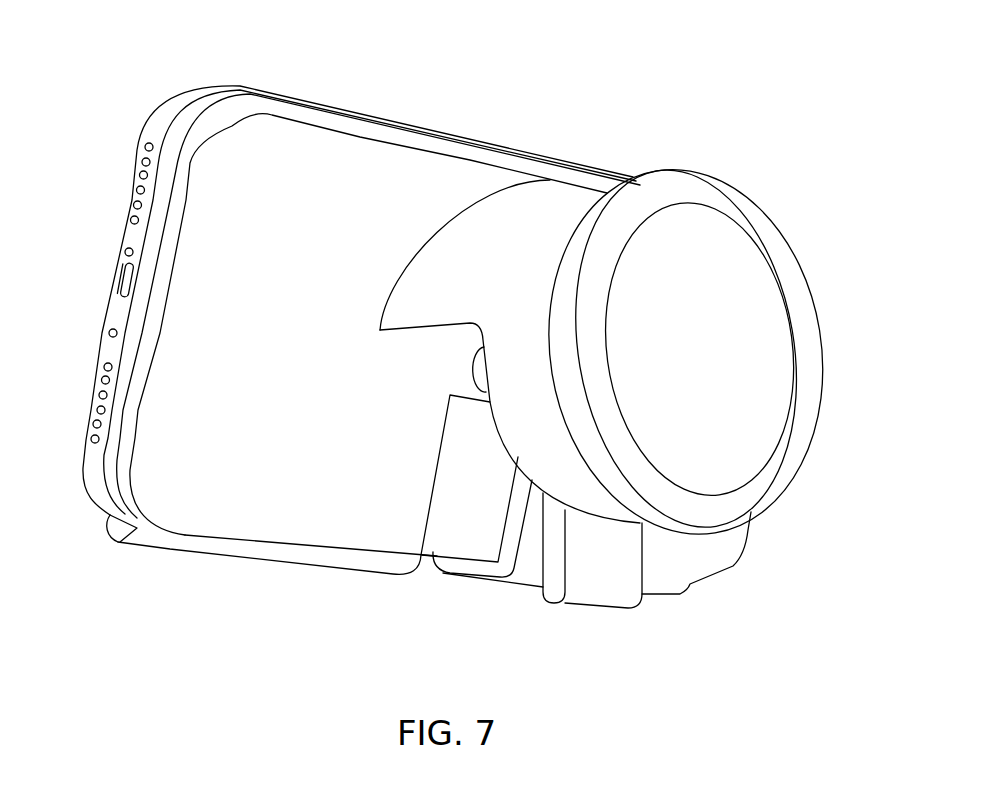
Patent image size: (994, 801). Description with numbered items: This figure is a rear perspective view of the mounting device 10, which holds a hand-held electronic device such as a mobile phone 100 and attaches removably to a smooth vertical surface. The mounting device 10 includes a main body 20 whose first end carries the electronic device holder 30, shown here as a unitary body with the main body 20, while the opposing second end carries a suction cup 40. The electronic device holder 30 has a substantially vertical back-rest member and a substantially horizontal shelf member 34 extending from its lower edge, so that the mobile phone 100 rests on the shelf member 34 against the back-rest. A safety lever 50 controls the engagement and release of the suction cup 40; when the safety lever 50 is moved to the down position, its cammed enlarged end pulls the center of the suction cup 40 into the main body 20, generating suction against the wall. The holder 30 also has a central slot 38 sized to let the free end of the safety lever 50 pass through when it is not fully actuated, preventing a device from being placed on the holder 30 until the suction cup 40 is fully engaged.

The mounting device 10 is at (128, 62).
The mobile phone 100 is at (112, 172).
The main body 20 is at (515, 235).
The electronic device holder 30 is at (263, 163).
The shelf member 34 is at (132, 531).
The slot 38 is at (467, 592).
The suction cup 40 is at (842, 323).
The safety lever 50 is at (595, 577).